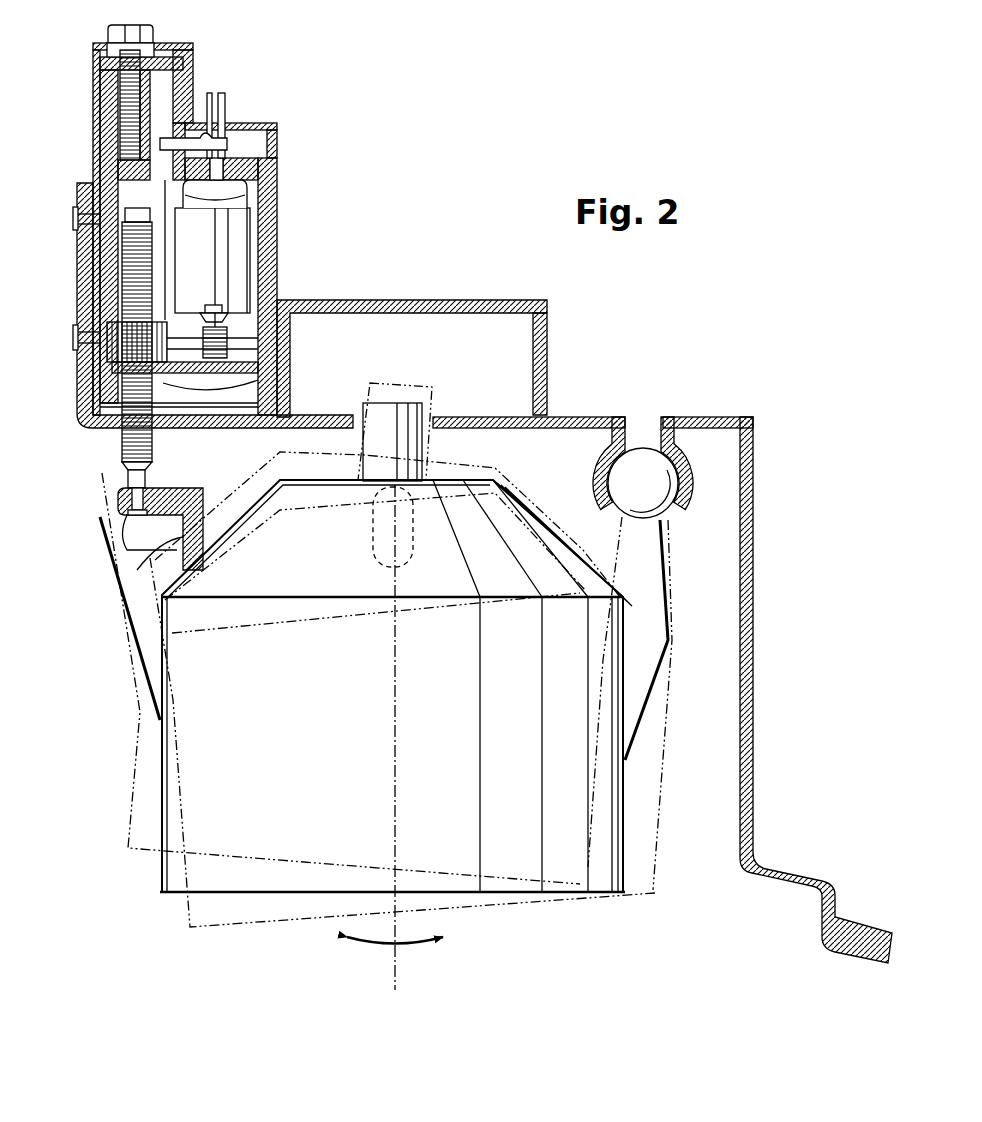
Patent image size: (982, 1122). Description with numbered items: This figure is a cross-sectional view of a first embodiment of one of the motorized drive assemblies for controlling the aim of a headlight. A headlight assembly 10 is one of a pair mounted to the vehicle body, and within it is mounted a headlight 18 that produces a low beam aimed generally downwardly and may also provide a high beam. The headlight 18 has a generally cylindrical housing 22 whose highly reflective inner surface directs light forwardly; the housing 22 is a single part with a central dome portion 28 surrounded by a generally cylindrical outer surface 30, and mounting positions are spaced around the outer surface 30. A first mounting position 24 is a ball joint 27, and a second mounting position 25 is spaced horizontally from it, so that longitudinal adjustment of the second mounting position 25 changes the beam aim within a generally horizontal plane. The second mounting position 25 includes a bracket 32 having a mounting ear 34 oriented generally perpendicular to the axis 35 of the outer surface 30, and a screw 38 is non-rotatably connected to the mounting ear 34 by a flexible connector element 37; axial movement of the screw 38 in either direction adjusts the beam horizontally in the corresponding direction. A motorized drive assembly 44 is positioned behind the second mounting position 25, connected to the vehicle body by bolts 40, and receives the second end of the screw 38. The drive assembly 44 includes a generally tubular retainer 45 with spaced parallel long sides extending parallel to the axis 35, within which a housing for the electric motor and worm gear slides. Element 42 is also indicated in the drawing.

The headlight assembly 10 is at (768, 852).
The headlight 18 is at (140, 868).
The headlight housing 22 is at (156, 805).
The first mounting position 24 is at (692, 463).
The second mounting position 25 is at (110, 500).
The ball joint 27 is at (645, 447).
The central dome portion 28 is at (477, 595).
The cylindrical outer surface 30 is at (625, 800).
The bracket 32 is at (187, 550).
The mounting ear 34 is at (123, 537).
The axis 35 is at (397, 955).
The flexible connector element 37 is at (125, 480).
The screw 38 is at (124, 436).
The bolts 40 is at (76, 222).
The cavity arc 42 is at (262, 378).
The motorized drive assembly 44 is at (88, 76).
The tubular retainer 45 is at (278, 272).